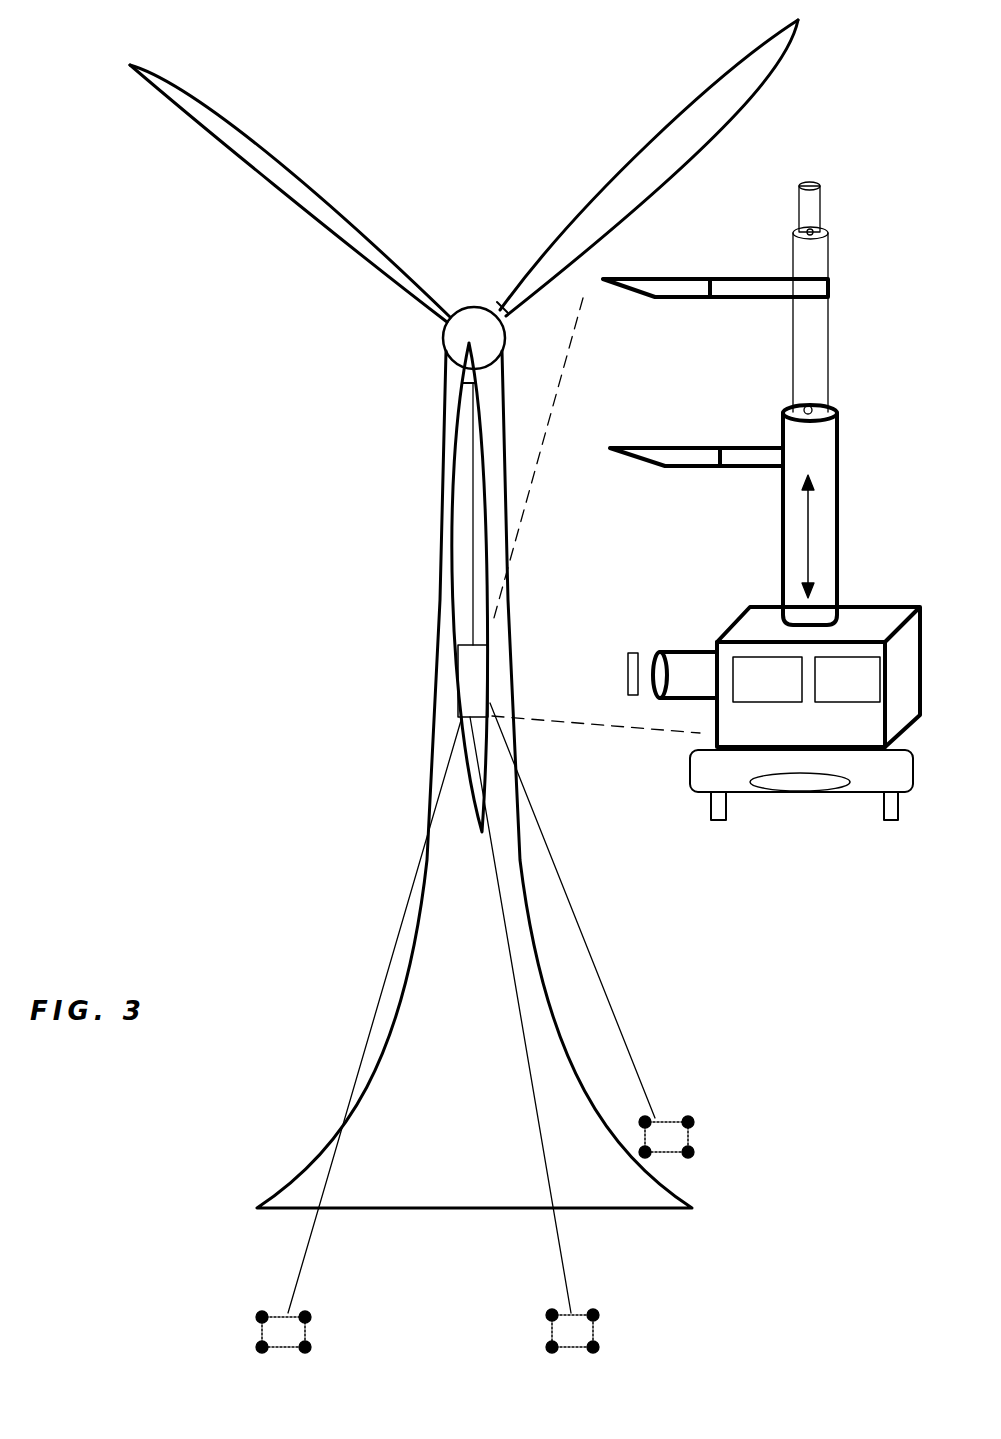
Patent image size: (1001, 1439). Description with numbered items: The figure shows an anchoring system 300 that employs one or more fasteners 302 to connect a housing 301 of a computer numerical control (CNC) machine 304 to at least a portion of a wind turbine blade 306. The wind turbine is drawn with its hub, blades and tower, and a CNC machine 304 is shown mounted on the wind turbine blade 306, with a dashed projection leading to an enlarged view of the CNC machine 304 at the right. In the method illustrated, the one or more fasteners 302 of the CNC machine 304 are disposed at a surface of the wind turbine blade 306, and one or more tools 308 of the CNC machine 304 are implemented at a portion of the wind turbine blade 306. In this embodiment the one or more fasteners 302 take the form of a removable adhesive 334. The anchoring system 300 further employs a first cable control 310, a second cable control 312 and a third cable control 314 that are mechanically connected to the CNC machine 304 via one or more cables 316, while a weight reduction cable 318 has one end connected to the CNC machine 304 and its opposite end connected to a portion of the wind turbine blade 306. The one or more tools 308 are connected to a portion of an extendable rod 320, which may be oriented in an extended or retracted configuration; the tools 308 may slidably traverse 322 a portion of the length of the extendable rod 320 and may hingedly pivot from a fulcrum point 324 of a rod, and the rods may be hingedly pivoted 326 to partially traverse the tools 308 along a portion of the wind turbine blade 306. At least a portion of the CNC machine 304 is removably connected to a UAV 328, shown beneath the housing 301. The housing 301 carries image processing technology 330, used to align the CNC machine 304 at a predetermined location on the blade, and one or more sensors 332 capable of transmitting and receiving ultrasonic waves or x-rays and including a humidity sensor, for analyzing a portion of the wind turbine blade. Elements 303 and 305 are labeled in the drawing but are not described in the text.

The anchoring system 300 is at (464, 108).
The housing 301 is at (786, 655).
The fasteners 302 is at (627, 632).
The support rod 303 is at (815, 622).
The computer numerical control (CNC) machine 304 is at (631, 501).
The cylinder 305 is at (824, 440).
The wind turbine blade 306 is at (457, 648).
The tools 308 is at (772, 291).
The first cable control 310 is at (262, 1327).
The second cable control 312 is at (550, 1330).
The third cable control 314 is at (688, 1122).
The cables 316 is at (598, 965).
The weight reduction cable 318 is at (468, 518).
The extendable rod 320 is at (783, 560).
The slidable traverse 322 is at (807, 538).
The fulcrum point 324 is at (806, 406).
The hinged pivoting 326 is at (772, 418).
The UAV 328 is at (690, 758).
The image processing technology 330 is at (767, 679).
The sensors 332 is at (847, 679).
The removable adhesive 334 is at (628, 675).